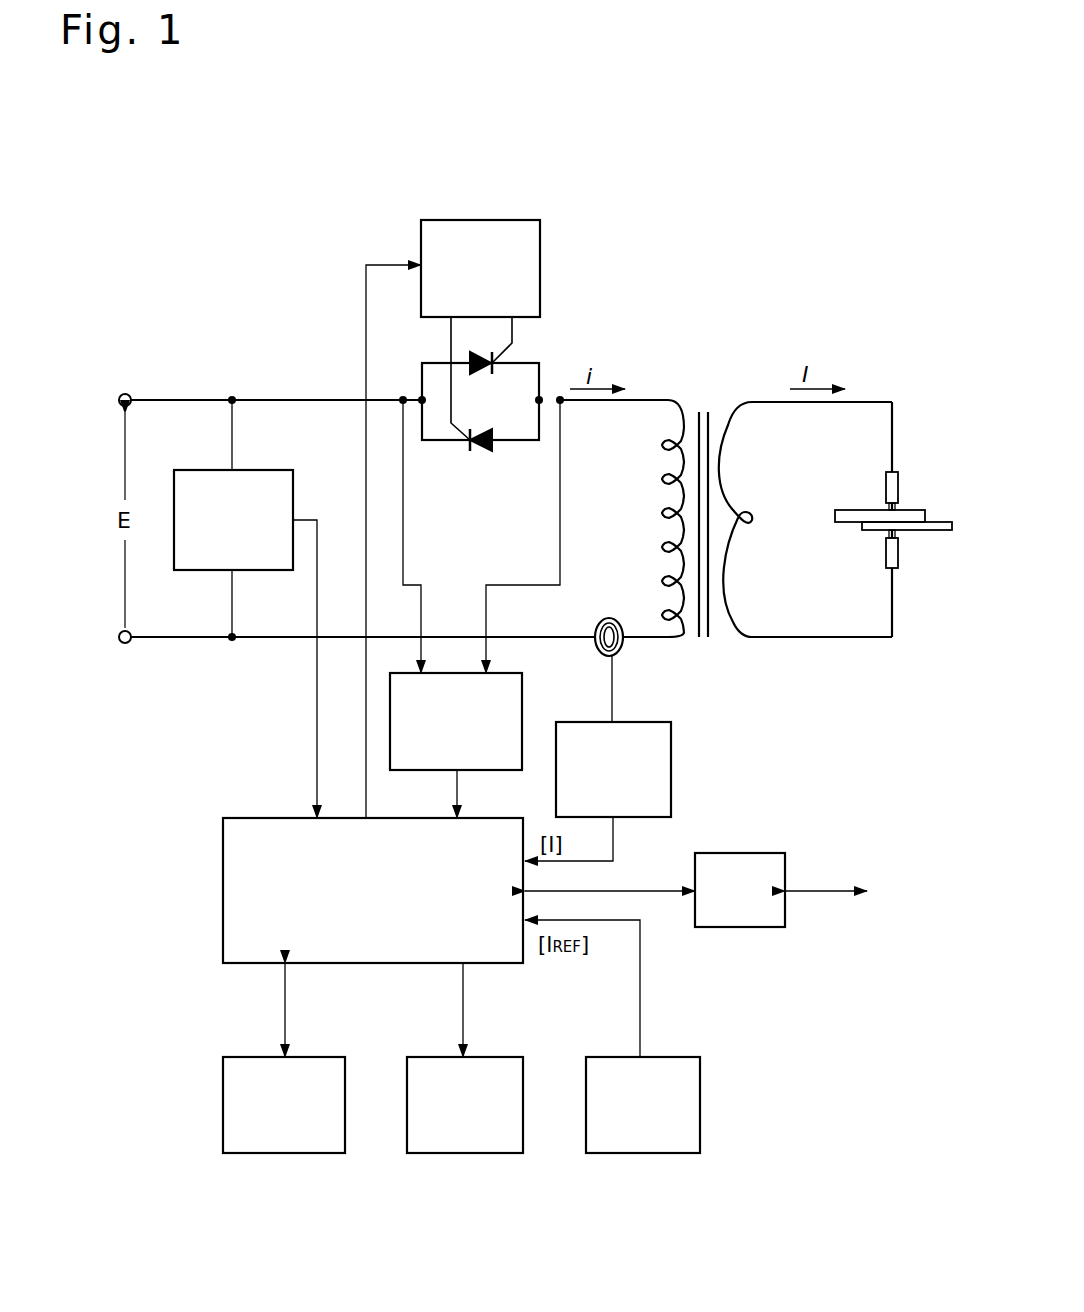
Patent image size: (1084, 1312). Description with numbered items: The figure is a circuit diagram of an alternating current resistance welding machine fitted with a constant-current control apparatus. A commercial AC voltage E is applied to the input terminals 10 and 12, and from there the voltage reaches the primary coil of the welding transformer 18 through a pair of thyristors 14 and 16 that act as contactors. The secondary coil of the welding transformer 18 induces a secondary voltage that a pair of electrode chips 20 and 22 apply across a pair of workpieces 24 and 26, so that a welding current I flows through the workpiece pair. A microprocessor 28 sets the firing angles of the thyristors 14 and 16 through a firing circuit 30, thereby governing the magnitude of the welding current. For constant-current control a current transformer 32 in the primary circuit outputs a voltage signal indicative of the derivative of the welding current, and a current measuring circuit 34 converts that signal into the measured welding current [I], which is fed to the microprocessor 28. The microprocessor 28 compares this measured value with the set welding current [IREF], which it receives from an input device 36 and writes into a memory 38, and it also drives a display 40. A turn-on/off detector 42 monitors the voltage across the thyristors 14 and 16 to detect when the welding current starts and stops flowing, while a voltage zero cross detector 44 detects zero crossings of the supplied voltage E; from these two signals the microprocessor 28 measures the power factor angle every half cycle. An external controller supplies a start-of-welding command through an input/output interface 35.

The input terminal 10 is at (127, 392).
The input terminal 12 is at (127, 645).
The thyristor 14 is at (480, 348).
The thyristor 16 is at (475, 455).
The welding transformer 18 is at (708, 400).
The electrode chip 20 is at (897, 490).
The electrode chip 22 is at (887, 555).
The workpiece 24 is at (915, 512).
The workpiece 26 is at (918, 531).
The microprocessor 28 is at (223, 848).
The firing circuit 30 is at (541, 255).
The current transformer 32 is at (608, 618).
The current measuring circuit 34 is at (672, 752).
The input/output interface 35 is at (755, 853).
The input device 36 is at (675, 1057).
The memory 38 is at (320, 1057).
The display 40 is at (500, 1057).
The turn-on/off detector 42 is at (523, 688).
The voltage zero cross detector 44 is at (268, 470).